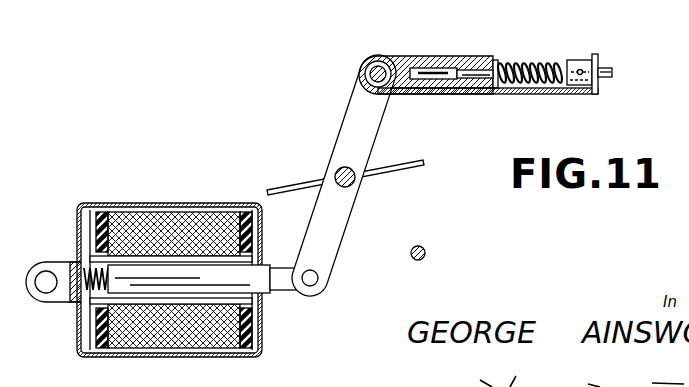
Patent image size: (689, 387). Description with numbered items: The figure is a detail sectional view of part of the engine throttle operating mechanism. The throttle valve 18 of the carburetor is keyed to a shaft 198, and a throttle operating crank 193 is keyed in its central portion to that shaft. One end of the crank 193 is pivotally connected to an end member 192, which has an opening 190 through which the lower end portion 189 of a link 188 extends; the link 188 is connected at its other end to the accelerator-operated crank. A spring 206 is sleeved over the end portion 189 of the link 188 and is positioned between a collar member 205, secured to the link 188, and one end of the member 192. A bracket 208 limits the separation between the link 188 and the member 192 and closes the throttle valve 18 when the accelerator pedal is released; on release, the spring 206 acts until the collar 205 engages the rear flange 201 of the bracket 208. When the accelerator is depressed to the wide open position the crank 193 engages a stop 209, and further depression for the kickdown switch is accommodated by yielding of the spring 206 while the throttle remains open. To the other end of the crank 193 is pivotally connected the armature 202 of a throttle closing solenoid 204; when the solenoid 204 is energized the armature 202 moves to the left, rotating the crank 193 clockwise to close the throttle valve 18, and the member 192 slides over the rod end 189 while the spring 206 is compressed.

The throttle valve 18 is at (416, 166).
The link 188 is at (611, 71).
The lower end portion of link 189 is at (482, 78).
The opening 190 is at (422, 72).
The end member 192 is at (478, 68).
The throttle operating crank 193 is at (370, 132).
The shaft 198 is at (343, 168).
The rear flange 201 is at (597, 55).
The armature 202 is at (143, 277).
The throttle closing solenoid 204 is at (127, 222).
The collar member 205 is at (577, 62).
The spring 206 is at (517, 63).
The bracket 208 is at (545, 95).
The stop 209 is at (425, 253).